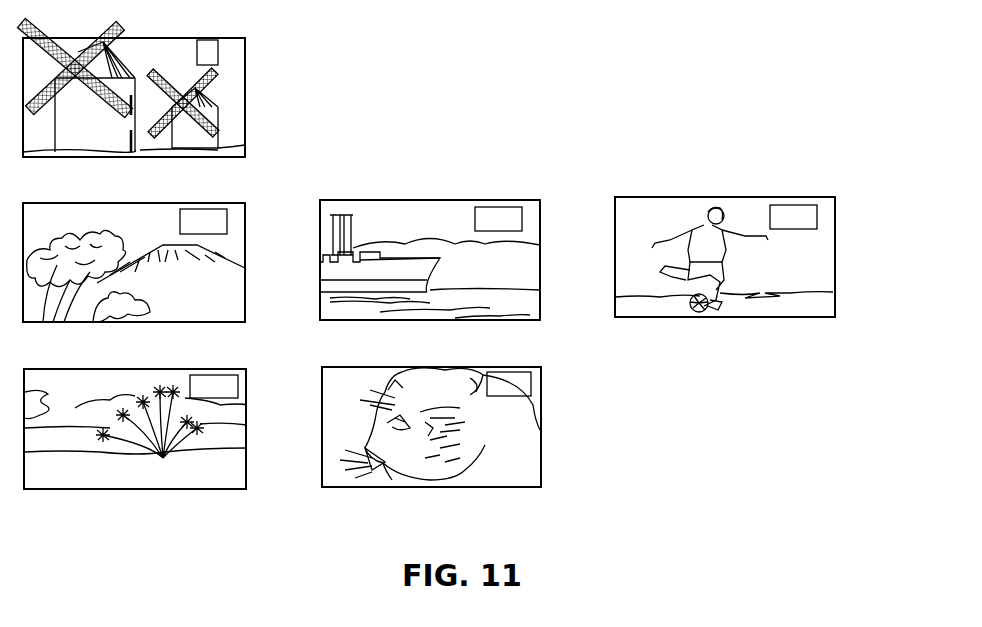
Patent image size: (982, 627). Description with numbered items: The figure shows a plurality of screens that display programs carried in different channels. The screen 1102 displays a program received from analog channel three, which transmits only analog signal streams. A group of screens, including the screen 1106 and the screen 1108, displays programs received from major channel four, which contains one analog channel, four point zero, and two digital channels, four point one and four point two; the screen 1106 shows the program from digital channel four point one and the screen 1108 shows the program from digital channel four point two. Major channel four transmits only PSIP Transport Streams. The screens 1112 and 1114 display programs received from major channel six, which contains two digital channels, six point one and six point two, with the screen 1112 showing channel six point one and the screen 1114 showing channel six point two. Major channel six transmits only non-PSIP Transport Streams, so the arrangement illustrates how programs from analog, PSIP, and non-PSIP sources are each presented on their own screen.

The screen 1102 is at (245, 60).
The screen 1106 is at (540, 205).
The screen 1108 is at (835, 203).
The screen 1112 is at (246, 375).
The screen 1114 is at (541, 372).